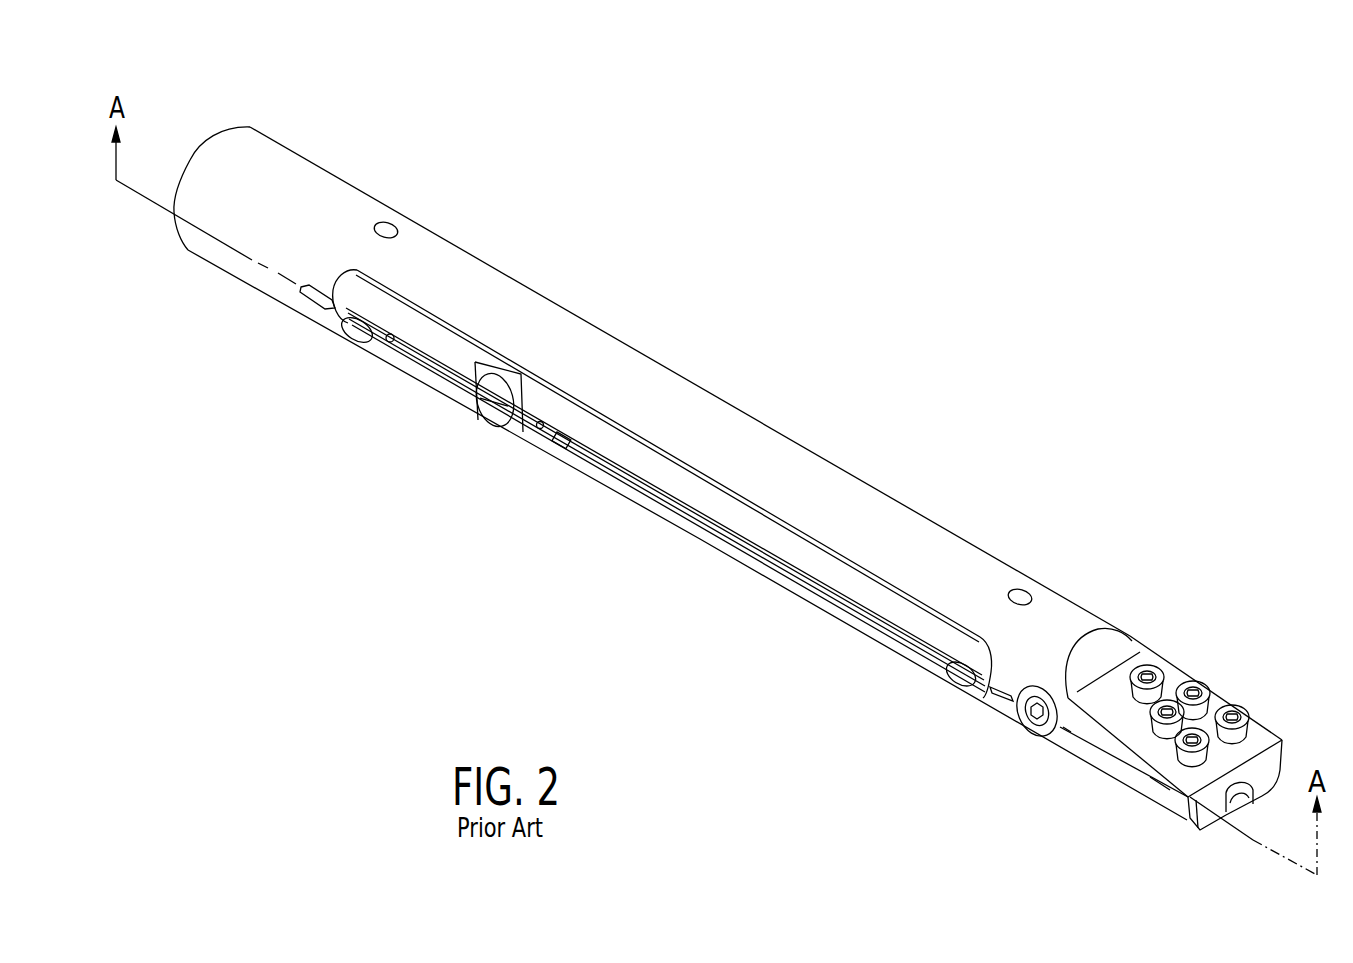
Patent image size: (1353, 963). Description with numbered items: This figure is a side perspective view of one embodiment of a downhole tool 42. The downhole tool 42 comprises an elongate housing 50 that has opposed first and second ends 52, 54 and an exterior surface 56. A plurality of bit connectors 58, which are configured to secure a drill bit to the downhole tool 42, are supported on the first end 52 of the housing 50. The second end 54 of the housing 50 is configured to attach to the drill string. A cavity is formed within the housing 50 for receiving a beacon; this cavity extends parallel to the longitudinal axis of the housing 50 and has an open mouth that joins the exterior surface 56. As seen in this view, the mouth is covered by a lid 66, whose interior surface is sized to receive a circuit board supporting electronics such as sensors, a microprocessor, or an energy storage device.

The downhole tool 42 is at (718, 468).
The elongate housing 50 is at (657, 430).
The first end 52 is at (1184, 755).
The second end 54 is at (189, 145).
The exterior surface 56 is at (690, 381).
The bit connectors 58 is at (1219, 691).
The lid 66 is at (656, 485).